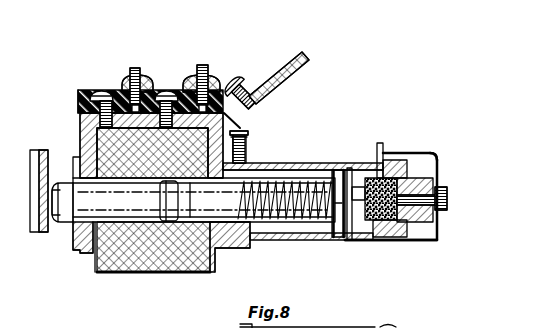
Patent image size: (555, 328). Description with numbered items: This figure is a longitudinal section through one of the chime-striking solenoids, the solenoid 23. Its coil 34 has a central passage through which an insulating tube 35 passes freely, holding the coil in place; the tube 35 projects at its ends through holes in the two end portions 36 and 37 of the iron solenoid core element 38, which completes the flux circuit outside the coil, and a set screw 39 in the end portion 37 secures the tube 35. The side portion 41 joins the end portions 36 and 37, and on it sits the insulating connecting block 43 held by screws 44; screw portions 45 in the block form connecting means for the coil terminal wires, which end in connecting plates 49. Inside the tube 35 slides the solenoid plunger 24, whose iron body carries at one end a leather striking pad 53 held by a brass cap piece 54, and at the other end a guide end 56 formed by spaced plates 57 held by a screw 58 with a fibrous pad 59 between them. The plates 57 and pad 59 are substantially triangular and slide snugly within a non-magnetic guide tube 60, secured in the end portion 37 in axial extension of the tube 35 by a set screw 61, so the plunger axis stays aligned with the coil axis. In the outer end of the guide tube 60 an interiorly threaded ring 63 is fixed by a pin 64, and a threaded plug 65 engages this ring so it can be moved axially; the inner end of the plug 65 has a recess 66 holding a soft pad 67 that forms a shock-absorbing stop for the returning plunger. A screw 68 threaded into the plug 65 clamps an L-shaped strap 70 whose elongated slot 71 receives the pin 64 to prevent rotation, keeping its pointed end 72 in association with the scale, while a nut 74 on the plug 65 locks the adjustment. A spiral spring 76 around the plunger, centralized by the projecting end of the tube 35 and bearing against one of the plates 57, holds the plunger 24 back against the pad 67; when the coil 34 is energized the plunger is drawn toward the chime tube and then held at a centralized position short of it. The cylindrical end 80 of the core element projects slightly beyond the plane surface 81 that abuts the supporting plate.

The solenoid 23 is at (253, 147).
The solenoid plunger 24 is at (157, 197).
The coil 34 is at (120, 263).
The tube 35 is at (127, 266).
The end portion 36 is at (64, 230).
The end portion 37 is at (213, 262).
The metal solenoid core element 38 is at (86, 131).
The set screw 39 is at (396, 325).
The side portion 41 is at (188, 84).
The connecting block 43 is at (82, 100).
The screws 44 is at (100, 100).
The screw portions 45 is at (137, 70).
The connecting plates 49 is at (223, 86).
The striking pad 53 is at (82, 238).
The cap piece 54 is at (193, 197).
The guide end 56 is at (335, 170).
The plates 57 is at (331, 240).
The screw 58 is at (368, 153).
The pad 59 is at (343, 148).
The guide tube 60 is at (300, 163).
The set screw 61 is at (244, 130).
The interiorly threaded ring 63 is at (403, 152).
The pin 64 is at (392, 147).
The threaded plug 65 is at (437, 160).
The recess 66 is at (393, 241).
The soft pad 67 is at (362, 239).
The screw 68 is at (417, 222).
The L-shaped strap 70 is at (438, 148).
The elongated slot 71 is at (438, 142).
The pointed end 72 is at (367, 147).
The nut 74 is at (412, 241).
The spring 76 is at (277, 240).
The cylindrical end 80 is at (70, 228).
The plane surface 81 is at (82, 140).